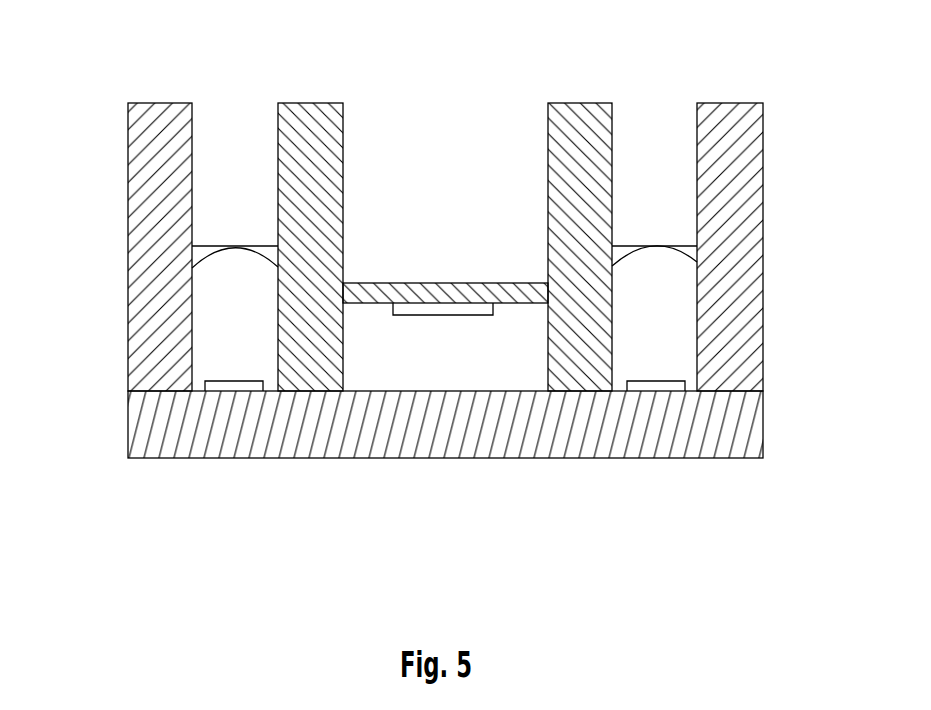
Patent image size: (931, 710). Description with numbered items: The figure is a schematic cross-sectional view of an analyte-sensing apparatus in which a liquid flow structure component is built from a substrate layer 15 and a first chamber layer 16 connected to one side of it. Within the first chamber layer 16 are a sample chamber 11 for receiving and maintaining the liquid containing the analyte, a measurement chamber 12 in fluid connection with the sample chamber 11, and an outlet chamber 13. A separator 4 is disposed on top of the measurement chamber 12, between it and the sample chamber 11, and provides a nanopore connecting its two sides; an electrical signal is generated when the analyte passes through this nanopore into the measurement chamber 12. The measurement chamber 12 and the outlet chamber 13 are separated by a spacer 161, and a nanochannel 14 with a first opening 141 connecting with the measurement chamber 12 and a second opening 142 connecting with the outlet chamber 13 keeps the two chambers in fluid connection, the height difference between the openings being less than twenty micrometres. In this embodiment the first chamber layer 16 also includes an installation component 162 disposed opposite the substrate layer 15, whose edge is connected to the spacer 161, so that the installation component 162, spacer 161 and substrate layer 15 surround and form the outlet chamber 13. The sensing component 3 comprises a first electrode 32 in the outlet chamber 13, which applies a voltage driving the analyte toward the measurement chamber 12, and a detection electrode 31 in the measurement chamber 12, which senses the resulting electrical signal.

The sensing component 3 is at (382, 563).
The separator 4 is at (273, 247).
The sample chamber 11 is at (697, 168).
The measurement chamber 12 is at (697, 317).
The outlet chamber 13 is at (512, 330).
The nanochannel 14 is at (663, 563).
The substrate layer 15 is at (112, 390).
The first chamber layer 16 is at (112, 105).
The detection electrode 31 is at (227, 383).
The first electrode 32 is at (443, 315).
The first opening 141 is at (612, 422).
The second opening 142 is at (548, 422).
The spacer 161 is at (573, 170).
The installation component 162 is at (417, 283).